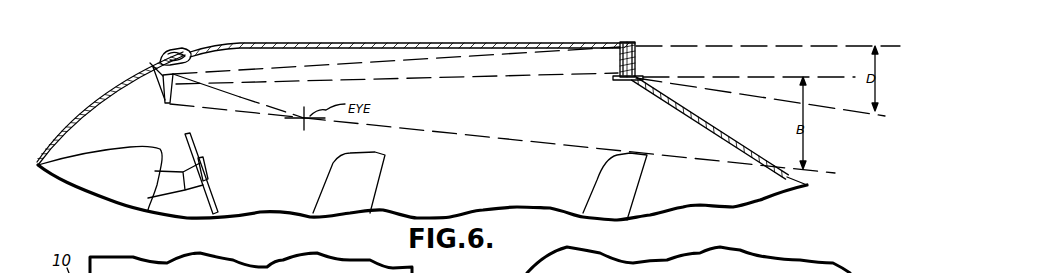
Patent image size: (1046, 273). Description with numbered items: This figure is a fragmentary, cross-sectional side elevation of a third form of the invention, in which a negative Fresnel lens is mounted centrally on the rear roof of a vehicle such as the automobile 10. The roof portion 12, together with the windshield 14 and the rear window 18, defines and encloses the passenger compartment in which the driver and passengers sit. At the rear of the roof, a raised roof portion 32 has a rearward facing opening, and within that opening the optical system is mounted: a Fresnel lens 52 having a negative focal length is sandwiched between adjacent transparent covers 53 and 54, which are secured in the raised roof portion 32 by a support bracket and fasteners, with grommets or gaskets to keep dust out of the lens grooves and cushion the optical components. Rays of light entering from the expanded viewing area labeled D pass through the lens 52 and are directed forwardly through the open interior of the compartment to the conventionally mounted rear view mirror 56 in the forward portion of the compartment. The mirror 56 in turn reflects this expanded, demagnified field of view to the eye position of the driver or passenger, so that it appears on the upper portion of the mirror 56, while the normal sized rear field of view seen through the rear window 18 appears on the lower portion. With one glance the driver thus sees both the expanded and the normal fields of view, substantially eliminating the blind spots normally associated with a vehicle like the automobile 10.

The automobile 10 is at (178, 36).
The roof portion 12 is at (265, 44).
The windshield 14 is at (113, 95).
The rear window 18 is at (704, 122).
The raised roof portion 32 is at (620, 41).
The Fresnel lens 52 is at (620, 81).
The transparent cover 53 is at (620, 54).
The transparent cover 54 is at (638, 58).
The rear view mirror 56 is at (165, 100).